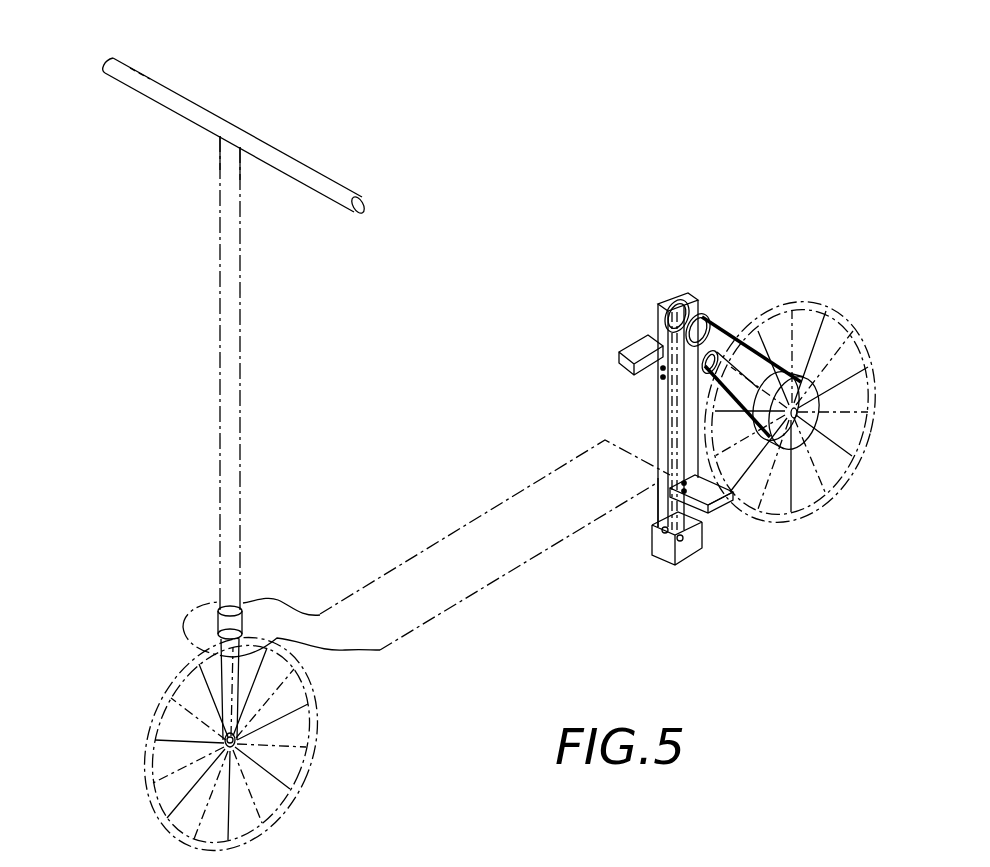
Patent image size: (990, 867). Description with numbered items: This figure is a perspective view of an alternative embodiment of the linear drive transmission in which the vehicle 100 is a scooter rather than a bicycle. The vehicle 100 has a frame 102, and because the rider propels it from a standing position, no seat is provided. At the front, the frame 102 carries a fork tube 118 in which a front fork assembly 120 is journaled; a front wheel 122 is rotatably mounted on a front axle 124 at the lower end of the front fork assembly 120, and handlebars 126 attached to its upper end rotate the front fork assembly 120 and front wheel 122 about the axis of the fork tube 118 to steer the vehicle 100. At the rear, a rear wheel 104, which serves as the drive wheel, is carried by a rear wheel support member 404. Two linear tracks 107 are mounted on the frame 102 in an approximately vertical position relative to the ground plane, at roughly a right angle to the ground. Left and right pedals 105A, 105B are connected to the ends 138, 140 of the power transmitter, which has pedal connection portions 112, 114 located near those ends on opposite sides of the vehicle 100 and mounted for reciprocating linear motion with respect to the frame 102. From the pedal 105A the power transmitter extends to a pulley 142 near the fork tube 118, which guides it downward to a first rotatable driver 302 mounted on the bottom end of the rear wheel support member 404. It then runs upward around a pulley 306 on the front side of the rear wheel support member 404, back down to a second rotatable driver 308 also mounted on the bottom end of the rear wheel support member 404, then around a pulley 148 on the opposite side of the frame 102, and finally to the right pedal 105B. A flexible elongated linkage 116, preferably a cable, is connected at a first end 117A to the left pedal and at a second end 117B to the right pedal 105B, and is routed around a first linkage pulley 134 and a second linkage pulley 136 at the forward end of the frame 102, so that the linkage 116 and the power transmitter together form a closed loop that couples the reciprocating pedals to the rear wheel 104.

The vehicle 100 is at (447, 243).
The frame 102 is at (470, 515).
The rear wheel 104 is at (820, 487).
The left pedal 105A is at (714, 512).
The right pedal 105B is at (628, 343).
The linear tracks 107 is at (658, 424).
The pedal connection portion 112 is at (658, 478).
The pedal connection portion 114 is at (662, 330).
The flexible elongated linkage 116 is at (666, 533).
The first end of linkage 117A is at (706, 510).
The second end of linkage 117B is at (662, 377).
The fork tube 118 is at (244, 615).
The front fork assembly 120 is at (221, 691).
The front wheel 122 is at (300, 782).
The front axle 124 is at (223, 753).
The handlebars 126 is at (143, 70).
The first linkage pulley 134 is at (681, 541).
The second linkage pulley 136 is at (658, 540).
The first end of power transmitter 138 is at (735, 500).
The second end of power transmitter 140 is at (658, 330).
The pulley 142 is at (733, 337).
The pulley 148 is at (686, 303).
The first rotatable driver 302 is at (818, 420).
The pulley 306 is at (762, 320).
The second rotatable driver 308 is at (793, 348).
The rear wheel support member 404 is at (812, 404).